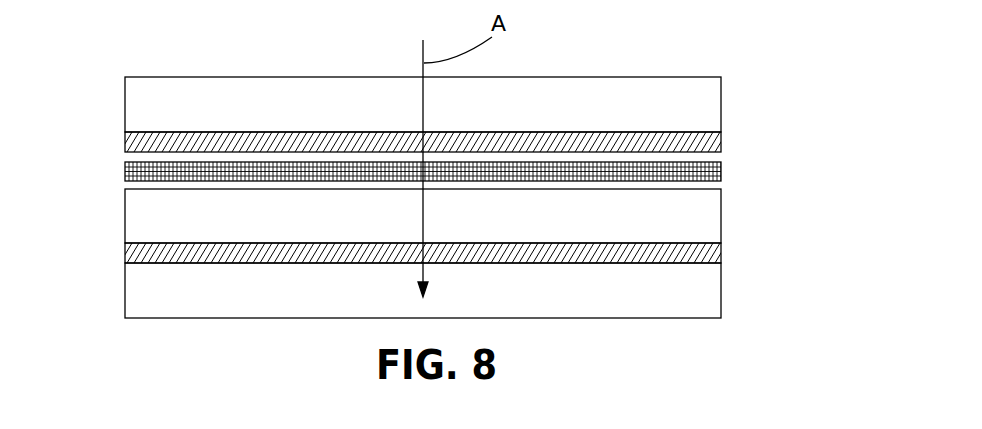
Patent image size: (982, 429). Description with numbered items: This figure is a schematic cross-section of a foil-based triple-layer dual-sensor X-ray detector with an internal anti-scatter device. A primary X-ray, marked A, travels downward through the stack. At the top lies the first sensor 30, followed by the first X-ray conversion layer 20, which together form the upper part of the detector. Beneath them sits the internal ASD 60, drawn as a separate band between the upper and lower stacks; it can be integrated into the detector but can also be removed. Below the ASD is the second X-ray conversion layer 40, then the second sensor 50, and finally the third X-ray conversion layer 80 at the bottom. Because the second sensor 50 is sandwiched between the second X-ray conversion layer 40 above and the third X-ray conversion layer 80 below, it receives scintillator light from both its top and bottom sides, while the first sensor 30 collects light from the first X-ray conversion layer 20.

The sensor 1 30 is at (702, 103).
The X-ray conversion layer 1 20 is at (723, 145).
The internal ASD 60 is at (723, 167).
The X-ray conversion layer 2 40 is at (707, 215).
The sensor 2 50 is at (722, 255).
The X-ray conversion layer 3 80 is at (705, 290).